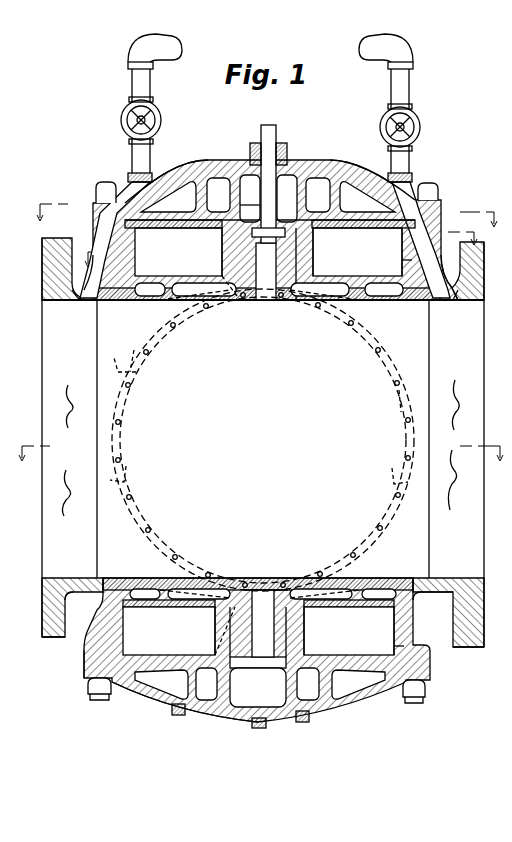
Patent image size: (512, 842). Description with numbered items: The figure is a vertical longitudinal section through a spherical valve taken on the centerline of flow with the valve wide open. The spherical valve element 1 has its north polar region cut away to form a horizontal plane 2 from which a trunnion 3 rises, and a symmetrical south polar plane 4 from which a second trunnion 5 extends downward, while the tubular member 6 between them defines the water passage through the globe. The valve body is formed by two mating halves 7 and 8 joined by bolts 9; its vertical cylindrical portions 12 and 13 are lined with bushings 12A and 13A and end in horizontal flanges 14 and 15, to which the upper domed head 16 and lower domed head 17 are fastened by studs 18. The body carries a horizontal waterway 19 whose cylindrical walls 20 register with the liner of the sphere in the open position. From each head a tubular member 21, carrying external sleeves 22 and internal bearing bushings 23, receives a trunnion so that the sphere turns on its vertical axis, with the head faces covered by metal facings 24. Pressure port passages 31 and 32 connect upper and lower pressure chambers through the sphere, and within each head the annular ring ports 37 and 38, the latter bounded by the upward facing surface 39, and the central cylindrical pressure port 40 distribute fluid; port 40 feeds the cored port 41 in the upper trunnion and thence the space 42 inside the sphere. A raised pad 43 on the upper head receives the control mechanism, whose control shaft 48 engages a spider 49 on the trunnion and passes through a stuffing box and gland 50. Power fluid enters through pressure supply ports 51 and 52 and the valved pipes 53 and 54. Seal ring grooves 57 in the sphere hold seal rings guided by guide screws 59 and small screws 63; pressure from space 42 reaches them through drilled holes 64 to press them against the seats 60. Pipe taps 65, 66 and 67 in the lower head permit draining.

The spherical valve element 1 is at (418, 318).
The horizontal plane 2 is at (146, 286).
The trunnion 3 is at (300, 250).
The second horizontal plane 4 is at (182, 606).
The second trunnion 5 is at (228, 630).
The tubular member 6 is at (414, 576).
The valve body half 7 is at (96, 606).
The valve body half 8 is at (424, 604).
The bolts 9 is at (283, 241).
The cylindrical portion 12 is at (408, 265).
The cylindrical bushing 12A is at (408, 244).
The cylindrical portion 13 is at (394, 630).
The cylindrical bushing 13A is at (394, 646).
The horizontal flange 14 is at (92, 226).
The horizontal flange 15 is at (83, 648).
The upper domed head 16 is at (206, 172).
The lower domed head 17 is at (150, 702).
The studs 18 is at (104, 180).
The waterway 19 is at (257, 448).
The cylindrical walls 20 is at (48, 588).
The tubular member 21 is at (228, 262).
The non-corrodible metal sleeves 22 is at (356, 256).
The bearing bushings 23 is at (224, 302).
The non-corrodible metal facings 24 is at (140, 230).
The pressure port passage 31 is at (154, 300).
The pressure port passage 32 is at (380, 300).
The annular ring port 37 is at (263, 439).
The annular ring port 38 is at (265, 441).
The upward facing surface 39 is at (176, 178).
The cylindrical pressure port 40 is at (264, 441).
The cored port 41 is at (264, 450).
The space 42 is at (340, 308).
The raised pad 43 is at (318, 162).
The control shaft 48 is at (278, 130).
The spider 49 is at (251, 203).
The stuffing box and gland 50 is at (286, 156).
The pressure supply port 51 is at (80, 302).
The pressure supply port 52 is at (452, 302).
The valved pipe 53 is at (118, 134).
The valved pipe 54 is at (426, 140).
The seal ring grooves 57 is at (334, 358).
The guide screws 59 is at (128, 356).
The seats 60 is at (96, 302).
The screws 63 is at (136, 366).
The drilled holes 64 is at (268, 302).
The pipe tap 65 is at (178, 718).
The pipe tap 66 is at (256, 730).
The pipe tap 67 is at (302, 724).